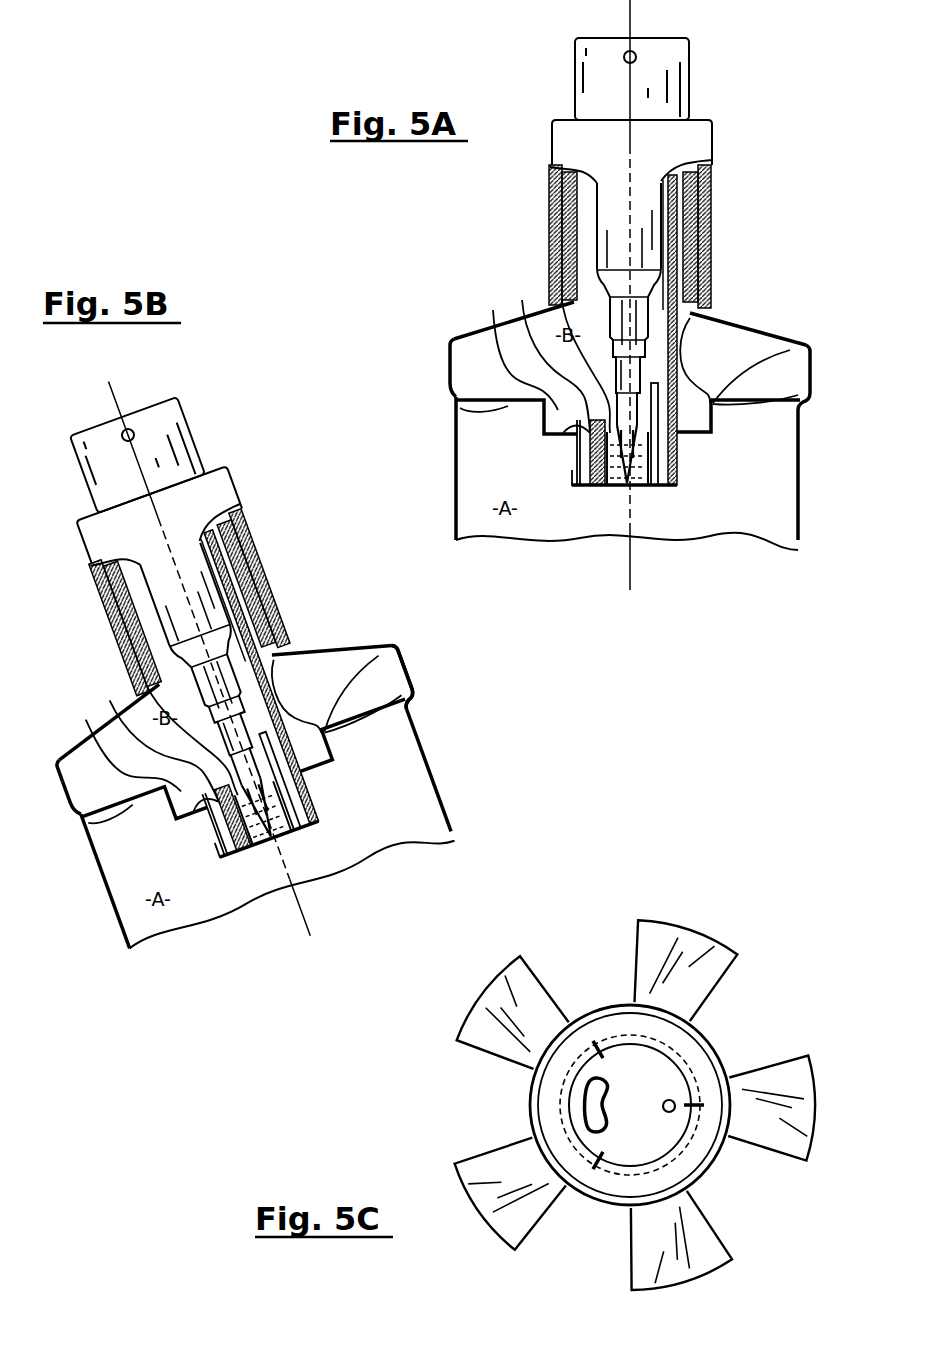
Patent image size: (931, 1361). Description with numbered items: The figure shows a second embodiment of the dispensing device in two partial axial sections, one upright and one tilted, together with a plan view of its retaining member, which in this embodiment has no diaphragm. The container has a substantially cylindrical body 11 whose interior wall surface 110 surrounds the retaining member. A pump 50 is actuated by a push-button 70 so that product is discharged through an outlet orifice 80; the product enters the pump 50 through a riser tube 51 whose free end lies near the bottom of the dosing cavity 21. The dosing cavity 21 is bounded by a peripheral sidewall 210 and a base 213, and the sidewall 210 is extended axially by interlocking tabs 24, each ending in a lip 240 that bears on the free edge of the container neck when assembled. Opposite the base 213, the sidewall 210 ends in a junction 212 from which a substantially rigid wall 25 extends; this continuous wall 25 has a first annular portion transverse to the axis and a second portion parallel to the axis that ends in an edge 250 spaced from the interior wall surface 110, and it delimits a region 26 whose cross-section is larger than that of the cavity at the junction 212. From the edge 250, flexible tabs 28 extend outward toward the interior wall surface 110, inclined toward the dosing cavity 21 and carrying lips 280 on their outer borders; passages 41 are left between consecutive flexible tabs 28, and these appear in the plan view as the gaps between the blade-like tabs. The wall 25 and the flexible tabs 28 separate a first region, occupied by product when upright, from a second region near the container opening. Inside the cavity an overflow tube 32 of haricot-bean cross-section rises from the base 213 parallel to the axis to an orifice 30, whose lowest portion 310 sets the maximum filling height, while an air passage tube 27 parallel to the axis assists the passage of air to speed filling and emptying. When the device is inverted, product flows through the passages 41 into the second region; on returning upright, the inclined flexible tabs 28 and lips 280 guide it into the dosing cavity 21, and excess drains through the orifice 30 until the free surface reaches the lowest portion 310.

In FIG. 5A, the cylindrical body 11 is at (594, 473).
In FIG. 5B, the cylindrical body 11 is at (247, 827).
In FIG. 5A, the dosing cavity 21 is at (569, 462).
In FIG. 5B, the dosing cavity 21 is at (214, 830).
In FIG. 5A, the interlocking tabs 24 is at (630, 303).
In FIG. 5B, the interlocking tabs 24 is at (218, 671).
In FIG. 5A, the substantially rigid wall 25 is at (738, 442).
In FIG. 5B, the substantially rigid wall 25 is at (352, 747).
In FIG. 5C, the substantially rigid wall 25 is at (565, 1050).
In FIG. 5A, the region 26 is at (446, 329).
In FIG. 5B, the region 26 is at (42, 749).
In FIG. 5A, the air passage tube 27 is at (698, 409).
In FIG. 5B, the air passage tube 27 is at (296, 744).
In FIG. 5C, the air passage tube 27 is at (675, 1100).
In FIG. 5A, the flexible tabs 28 is at (820, 359).
In FIG. 5B, the flexible tabs 28 is at (402, 652).
In FIG. 5C, the flexible tabs 28 is at (478, 1174).
In FIG. 5A, the orifice 30 is at (516, 348).
In FIG. 5B, the orifice 30 is at (116, 753).
In FIG. 5C, the orifice 30 is at (586, 1087).
In FIG. 5A, the tube 32 is at (560, 522).
In FIG. 5B, the tube 32 is at (220, 893).
In FIG. 5A, the passages 41 is at (490, 413).
In FIG. 5B, the passages 41 is at (118, 811).
In FIG. 5C, the passages 41 is at (565, 972).
In FIG. 5A, the pump 50 is at (655, 271).
In FIG. 5B, the pump 50 is at (202, 630).
In FIG. 5A, the riser tube 51 is at (641, 505).
In FIG. 5B, the riser tube 51 is at (289, 853).
In FIG. 5A, the push-button 70 is at (664, 79).
In FIG. 5B, the push-button 70 is at (162, 455).
In FIG. 5A, the outlet orifice 80 is at (574, 70).
In FIG. 5B, the outlet orifice 80 is at (82, 460).
In FIG. 5A, the interior wall surface 110 is at (403, 361).
In FIG. 5B, the interior wall surface 110 is at (414, 712).
In FIG. 5A, the sidewall 210 is at (672, 500).
In FIG. 5B, the sidewall 210 is at (318, 829).
In FIG. 5A, the junction 212 is at (540, 452).
In FIG. 5B, the junction 212 is at (177, 820).
In FIG. 5A, the base 213 is at (605, 529).
In FIG. 5B, the base 213 is at (262, 884).
In FIG. 5A, the lip 240 is at (673, 317).
In FIG. 5B, the lip 240 is at (220, 671).
In FIG. 5C, the lip 240 is at (599, 1044).
In FIG. 5A, the edge 250 is at (739, 350).
In FIG. 5B, the edge 250 is at (334, 674).
In FIG. 5C, the edge 250 is at (680, 1012).
In FIG. 5C, the lips 280 is at (714, 1230).
In FIG. 5A, the lowest portion 310 is at (552, 343).
In FIG. 5B, the lowest portion 310 is at (151, 740).